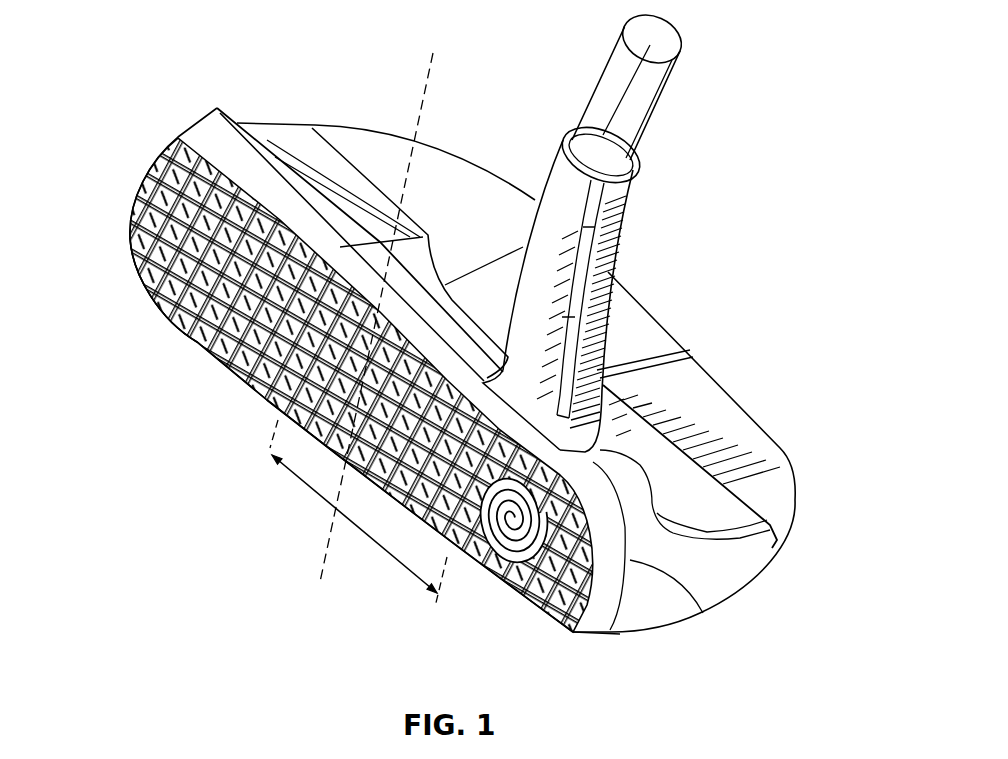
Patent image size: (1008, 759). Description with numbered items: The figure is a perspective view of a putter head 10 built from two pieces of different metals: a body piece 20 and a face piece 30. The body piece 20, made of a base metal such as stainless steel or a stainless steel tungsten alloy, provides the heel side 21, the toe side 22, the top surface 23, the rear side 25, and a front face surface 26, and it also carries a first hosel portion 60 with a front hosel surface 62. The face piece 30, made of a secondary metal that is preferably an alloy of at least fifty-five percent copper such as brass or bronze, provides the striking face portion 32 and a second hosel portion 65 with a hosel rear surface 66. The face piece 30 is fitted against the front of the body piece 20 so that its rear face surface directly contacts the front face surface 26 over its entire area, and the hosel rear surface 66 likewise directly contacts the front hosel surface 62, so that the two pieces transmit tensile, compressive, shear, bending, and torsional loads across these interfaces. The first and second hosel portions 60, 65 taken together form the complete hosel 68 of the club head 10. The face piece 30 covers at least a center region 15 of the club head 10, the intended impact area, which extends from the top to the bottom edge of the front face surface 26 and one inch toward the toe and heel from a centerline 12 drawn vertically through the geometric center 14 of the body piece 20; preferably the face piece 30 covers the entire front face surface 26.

The putter head 10 is at (120, 68).
The centerline 12 is at (450, 68).
The geometric center 14 is at (268, 456).
The center region 15 is at (300, 478).
The body piece 20 is at (312, 130).
The heel side 21 is at (633, 612).
The toe side 22 is at (195, 127).
The top surface 23 is at (312, 203).
The rear side 25 is at (728, 398).
The front face surface 26 is at (703, 613).
The face piece 30 is at (132, 241).
The striking face portion 32 is at (190, 330).
The first hosel portion 60 is at (607, 244).
The front hosel surface 62 is at (585, 310).
The second hosel portion 65 is at (555, 172).
The hosel rear surface 66 is at (575, 370).
The hosel 68 is at (640, 163).